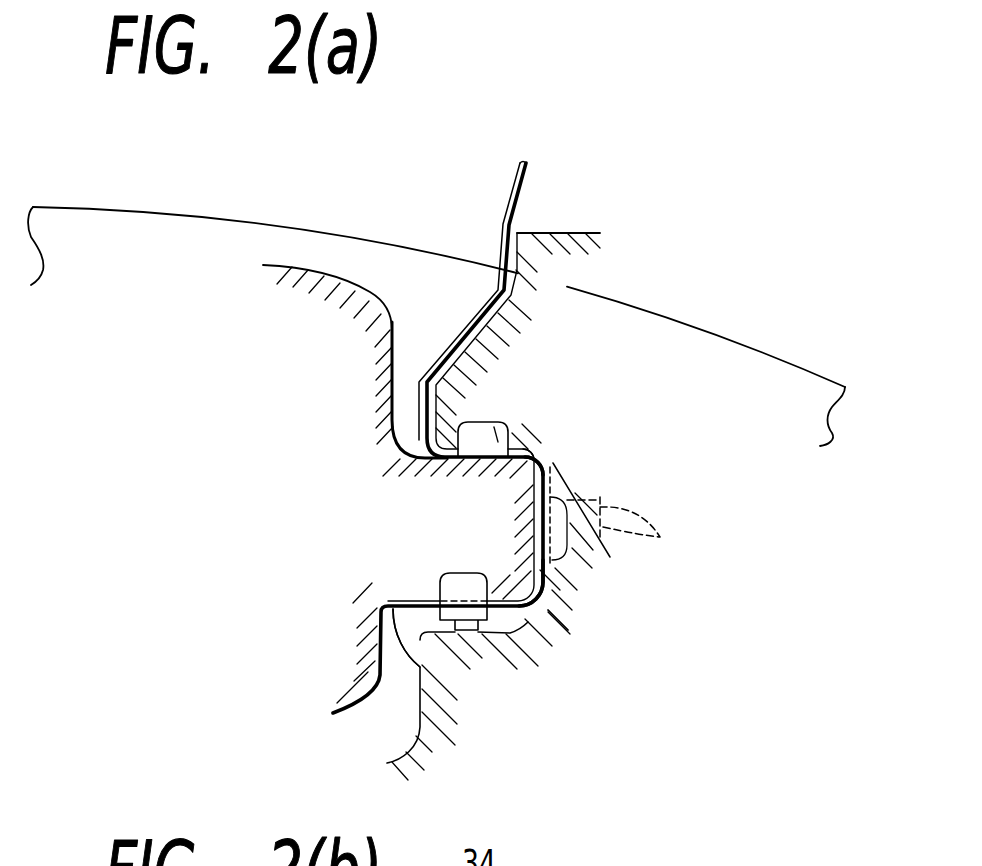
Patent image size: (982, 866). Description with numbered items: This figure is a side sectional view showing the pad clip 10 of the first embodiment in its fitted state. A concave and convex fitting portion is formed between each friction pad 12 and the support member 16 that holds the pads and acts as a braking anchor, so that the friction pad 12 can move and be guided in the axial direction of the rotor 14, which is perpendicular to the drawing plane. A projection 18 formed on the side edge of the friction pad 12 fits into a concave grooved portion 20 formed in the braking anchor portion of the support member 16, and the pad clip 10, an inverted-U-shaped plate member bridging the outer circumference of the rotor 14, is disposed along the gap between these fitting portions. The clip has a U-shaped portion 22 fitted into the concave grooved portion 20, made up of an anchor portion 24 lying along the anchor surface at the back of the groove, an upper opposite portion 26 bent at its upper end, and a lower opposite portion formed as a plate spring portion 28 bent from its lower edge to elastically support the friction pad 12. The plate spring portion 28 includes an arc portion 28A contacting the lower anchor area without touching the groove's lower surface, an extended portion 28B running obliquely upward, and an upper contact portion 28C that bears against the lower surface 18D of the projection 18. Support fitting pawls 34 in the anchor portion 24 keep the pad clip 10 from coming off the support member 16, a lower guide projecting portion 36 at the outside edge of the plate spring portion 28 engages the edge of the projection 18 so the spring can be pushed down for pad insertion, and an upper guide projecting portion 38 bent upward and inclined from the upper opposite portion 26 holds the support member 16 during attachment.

The pad clip 10 is at (443, 322).
The friction pad 12 is at (292, 254).
The rotor 14 is at (748, 378).
The support member 16 is at (562, 234).
The projection 18 is at (460, 525).
The lower surface of the projection 18D is at (403, 597).
The concave grooved portion 20 is at (553, 467).
The U-shaped portion 22 is at (560, 452).
The anchor portion 24 is at (555, 572).
The upper opposite portion 26 is at (518, 446).
The plate spring portion 28 is at (673, 689).
The arc portion 28A is at (537, 620).
The extended portion 28B is at (463, 635).
The upper contact portion 28C is at (455, 705).
The support fitting pawl 34 is at (660, 537).
The lower guide projecting portion 36 is at (453, 580).
The upper guide projecting portion 38 is at (497, 422).